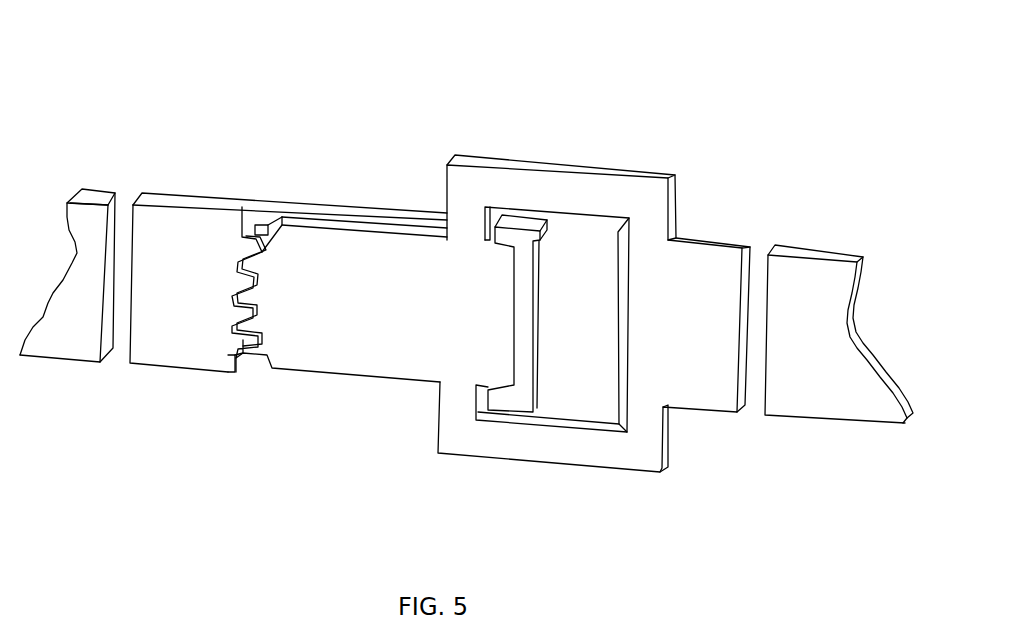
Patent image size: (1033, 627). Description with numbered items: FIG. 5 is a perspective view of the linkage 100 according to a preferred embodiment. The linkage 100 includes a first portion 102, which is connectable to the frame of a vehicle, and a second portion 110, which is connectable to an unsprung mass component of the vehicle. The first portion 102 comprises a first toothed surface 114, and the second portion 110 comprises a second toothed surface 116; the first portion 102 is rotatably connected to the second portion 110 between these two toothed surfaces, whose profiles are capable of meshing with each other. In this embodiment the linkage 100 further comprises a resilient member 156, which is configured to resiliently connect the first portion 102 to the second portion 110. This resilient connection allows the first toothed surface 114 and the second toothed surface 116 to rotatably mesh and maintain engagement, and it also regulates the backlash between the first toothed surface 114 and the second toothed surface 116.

The linkage 100 is at (377, 183).
The first portion 102 is at (175, 232).
The second portion 110 is at (637, 190).
The first toothed surface 114 is at (234, 362).
The second toothed surface 116 is at (266, 235).
The resilient member 156 is at (523, 258).